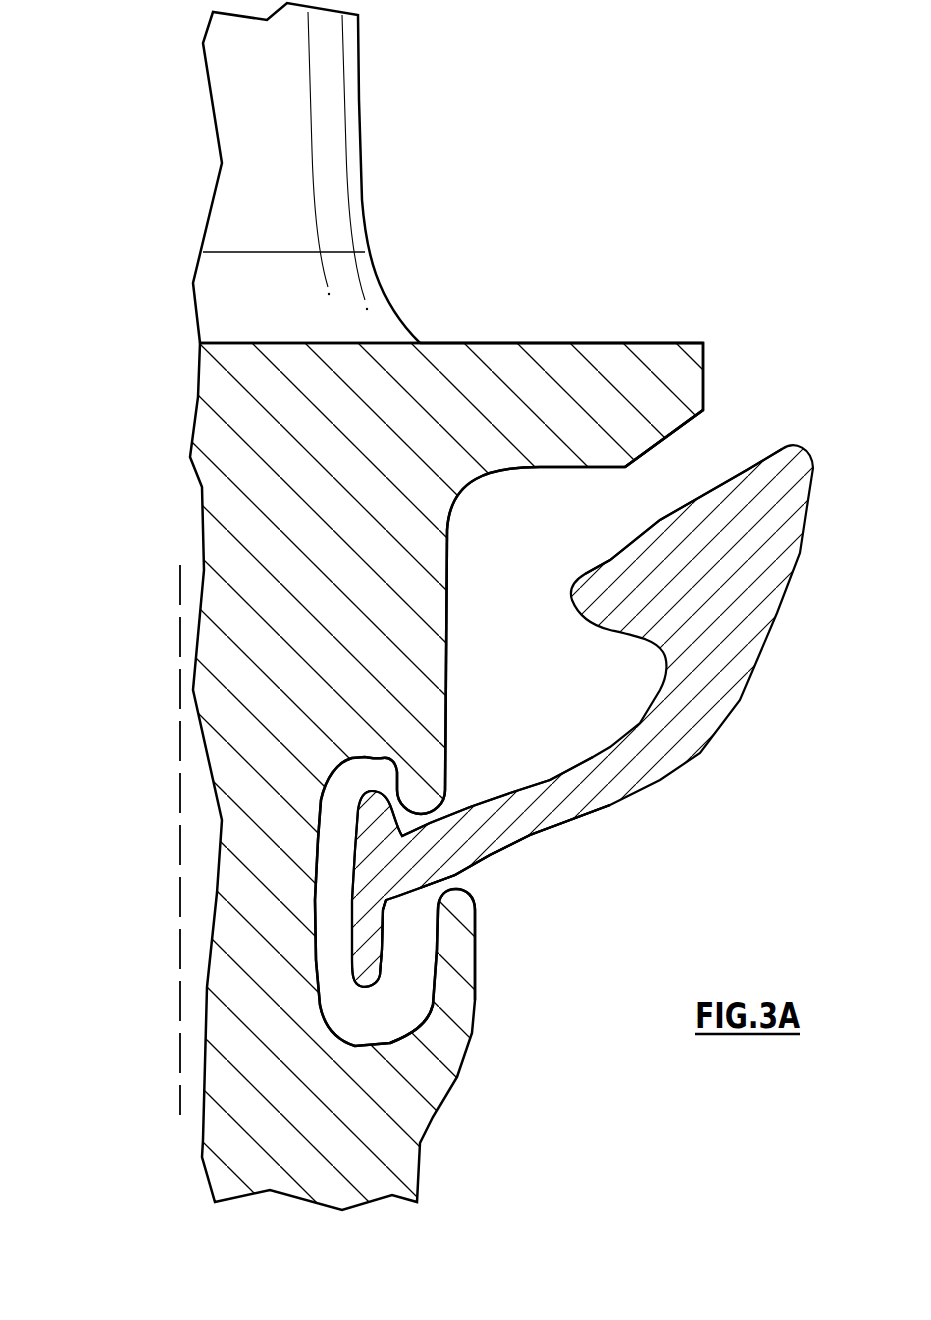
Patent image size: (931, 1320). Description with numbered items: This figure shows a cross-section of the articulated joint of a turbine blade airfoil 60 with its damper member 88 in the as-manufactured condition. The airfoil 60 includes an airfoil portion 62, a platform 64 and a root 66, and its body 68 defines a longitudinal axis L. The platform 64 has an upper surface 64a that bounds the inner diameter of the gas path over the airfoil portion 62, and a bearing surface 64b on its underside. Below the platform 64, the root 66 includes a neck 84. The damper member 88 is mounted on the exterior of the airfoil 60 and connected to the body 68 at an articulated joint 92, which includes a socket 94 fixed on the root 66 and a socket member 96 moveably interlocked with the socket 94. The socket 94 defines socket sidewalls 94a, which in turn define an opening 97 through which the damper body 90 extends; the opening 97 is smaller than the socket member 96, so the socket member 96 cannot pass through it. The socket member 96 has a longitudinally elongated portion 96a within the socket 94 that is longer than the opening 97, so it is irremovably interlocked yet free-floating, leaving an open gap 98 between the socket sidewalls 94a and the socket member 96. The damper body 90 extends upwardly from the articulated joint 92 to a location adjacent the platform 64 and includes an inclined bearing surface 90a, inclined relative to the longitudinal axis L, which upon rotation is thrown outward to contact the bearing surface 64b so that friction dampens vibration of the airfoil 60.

The airfoil 60 is at (598, 175).
The airfoil portion 62 is at (374, 192).
The platform 64 is at (718, 375).
The upper surface 64a is at (612, 343).
The bearing surface 64b is at (686, 424).
The root 66 is at (473, 1078).
The body 68 is at (452, 518).
The neck 84 is at (447, 651).
The damper member 88 is at (538, 883).
The damper body 90 is at (745, 700).
The inclined bearing surface 90a is at (740, 473).
The articulated joint 92 is at (476, 777).
The socket 94 is at (396, 1032).
The socket sidewalls 94a is at (402, 776).
The socket member 96 is at (476, 1000).
The longitudinally elongated portion 96a is at (399, 958).
The opening 97 is at (465, 873).
The open gap 98 is at (333, 955).
The longitudinal axis L is at (180, 862).